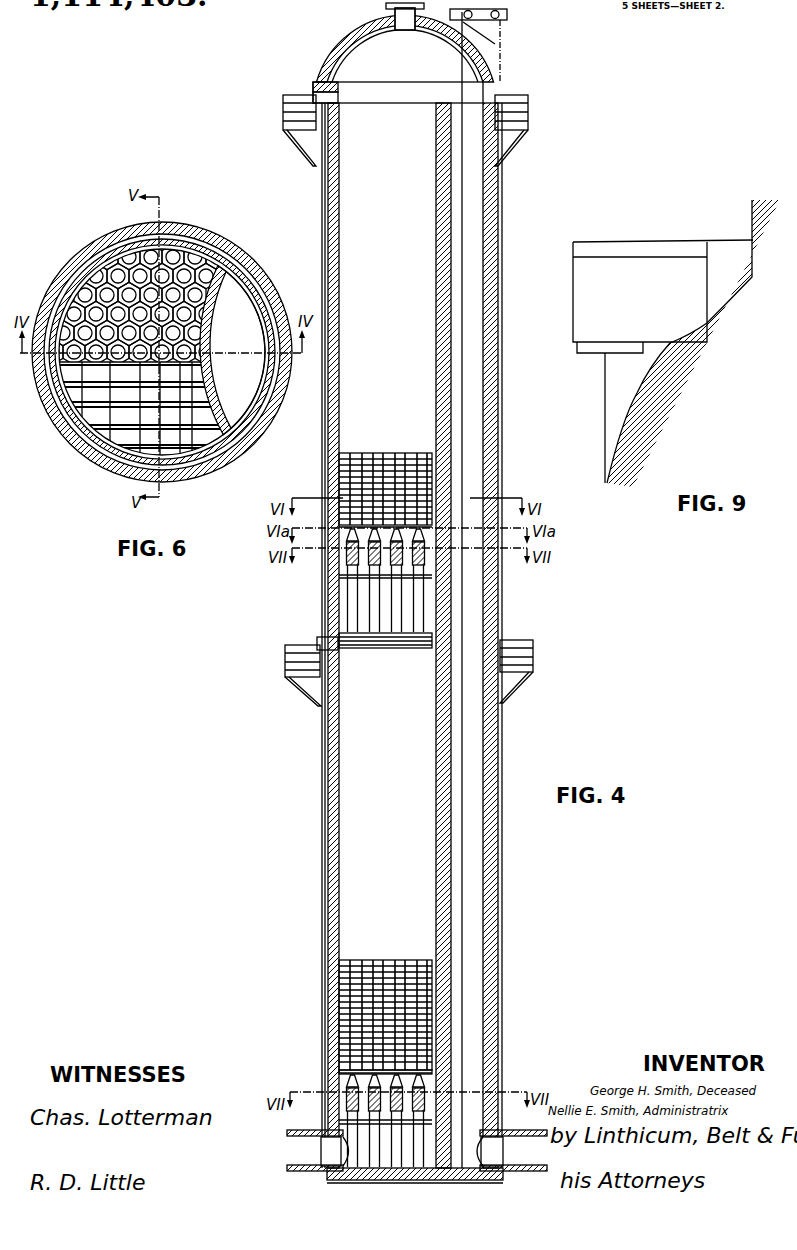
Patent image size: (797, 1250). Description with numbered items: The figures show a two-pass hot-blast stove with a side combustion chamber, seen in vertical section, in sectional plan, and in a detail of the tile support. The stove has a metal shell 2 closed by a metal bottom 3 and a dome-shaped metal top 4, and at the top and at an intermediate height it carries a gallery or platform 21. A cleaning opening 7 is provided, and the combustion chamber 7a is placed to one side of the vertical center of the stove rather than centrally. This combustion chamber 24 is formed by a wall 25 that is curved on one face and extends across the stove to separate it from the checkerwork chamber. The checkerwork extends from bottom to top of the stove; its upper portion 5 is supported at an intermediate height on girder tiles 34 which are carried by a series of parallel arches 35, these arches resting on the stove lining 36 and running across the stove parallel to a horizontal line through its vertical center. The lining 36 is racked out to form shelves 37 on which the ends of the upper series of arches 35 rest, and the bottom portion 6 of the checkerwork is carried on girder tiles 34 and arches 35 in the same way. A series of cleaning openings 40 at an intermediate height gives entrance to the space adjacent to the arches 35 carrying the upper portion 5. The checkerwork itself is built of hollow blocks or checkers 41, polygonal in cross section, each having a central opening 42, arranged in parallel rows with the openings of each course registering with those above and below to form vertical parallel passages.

In FIG. 4, the metal shell 2 is at (498, 598).
In FIG. 4, the metal bottom 3 is at (414, 1181).
In FIG. 4, the dome-shaped metal top 4 is at (331, 52).
In FIG. 4, the upper portion of the checkerwork 5 is at (414, 453).
In FIG. 4, the bottom portion of the checkerwork 6 is at (322, 982).
In FIG. 4, the cleaning opening 7 is at (407, 22).
In FIG. 4, the combustion chamber 7a is at (508, 22).
In FIG. 4, the gallery or platform 21 is at (528, 118).
In FIG. 4, the combustion chamber 24 is at (473, 590).
In FIG. 6, the combustion chamber 24 is at (245, 350).
In FIG. 4, the wall 25 is at (445, 786).
In FIG. 6, the wall 25 is at (227, 377).
In FIG. 4, the girder tiles 34 is at (347, 1077).
In FIG. 9, the girder tiles 34 is at (676, 343).
In FIG. 4, the parallel arches 35 is at (375, 603).
In FIG. 6, the parallel arches 35 is at (110, 473).
In FIG. 4, the stove lining 36 is at (339, 820).
In FIG. 4, the shelves 37 is at (386, 650).
In FIG. 4, the cleaning openings 40 is at (318, 643).
In FIG. 6, the hollow blocks or checkers 41 is at (113, 242).
In FIG. 6, the central opening 42 is at (222, 242).